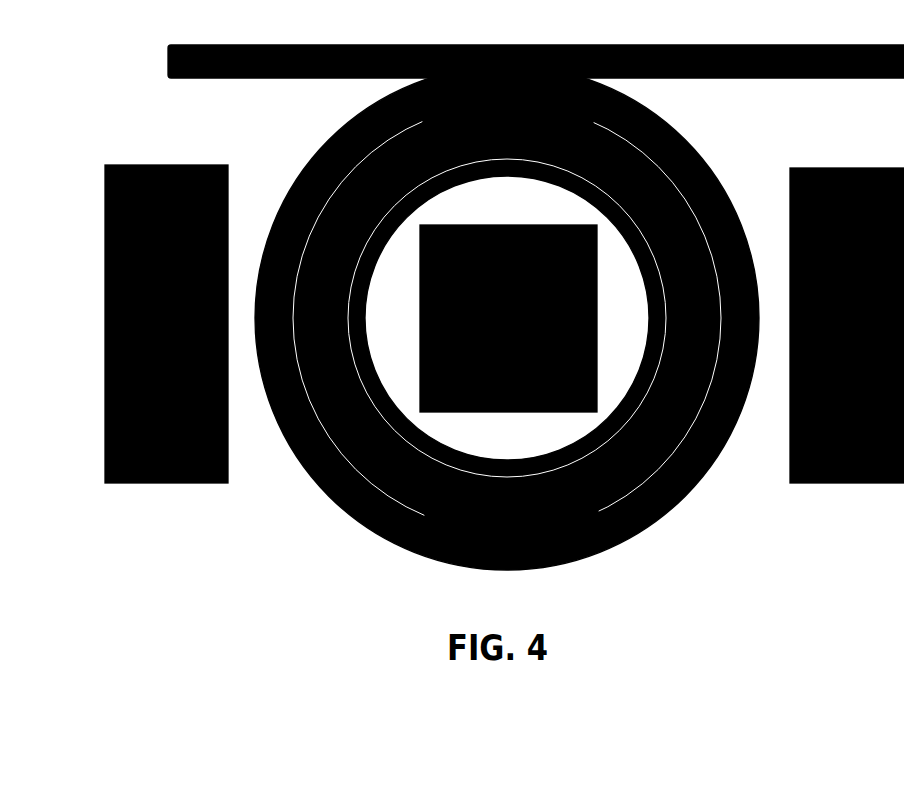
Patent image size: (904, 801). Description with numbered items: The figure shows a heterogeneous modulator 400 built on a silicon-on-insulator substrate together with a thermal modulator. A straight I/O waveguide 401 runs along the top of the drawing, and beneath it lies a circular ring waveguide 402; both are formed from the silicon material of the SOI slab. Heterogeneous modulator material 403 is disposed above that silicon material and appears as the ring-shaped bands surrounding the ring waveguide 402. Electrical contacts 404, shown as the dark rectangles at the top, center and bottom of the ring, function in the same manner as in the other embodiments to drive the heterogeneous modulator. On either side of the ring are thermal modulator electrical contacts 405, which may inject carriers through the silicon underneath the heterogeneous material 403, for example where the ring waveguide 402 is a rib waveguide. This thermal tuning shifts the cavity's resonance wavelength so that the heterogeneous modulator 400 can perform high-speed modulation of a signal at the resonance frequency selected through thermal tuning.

The modulator 400 is at (369, 30).
The I/O waveguide 401 is at (536, 86).
The ring waveguide 402 is at (672, 453).
The heterogeneous modulator material 403 is at (397, 438).
The electrical contacts 404 is at (509, 319).
The thermal modulator electrical contacts 405 is at (504, 324).